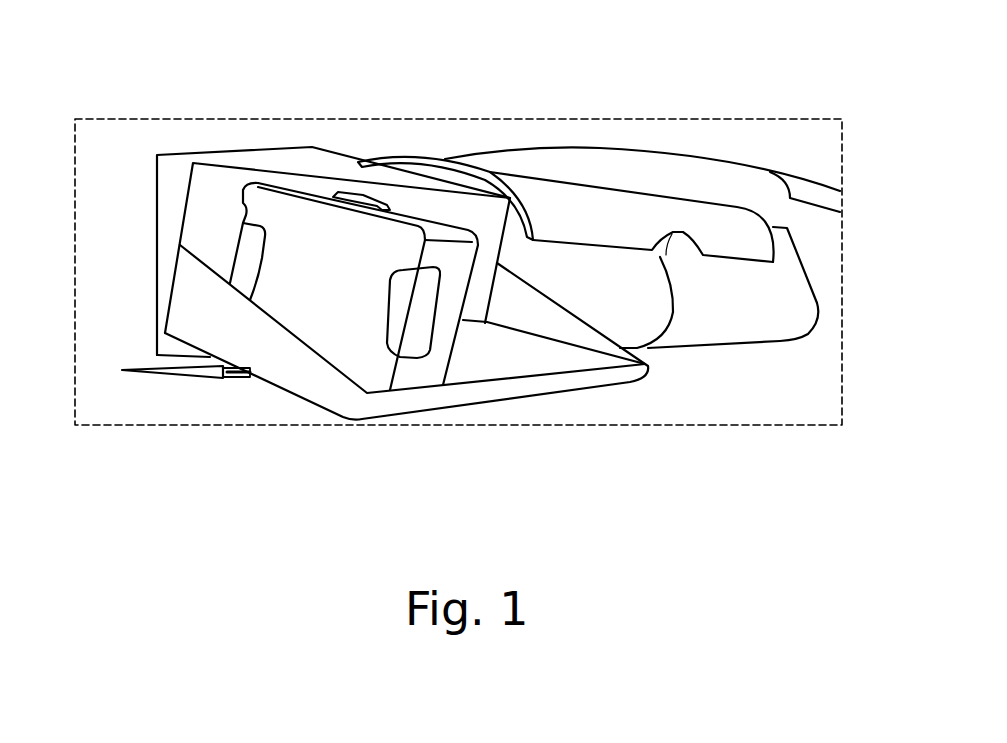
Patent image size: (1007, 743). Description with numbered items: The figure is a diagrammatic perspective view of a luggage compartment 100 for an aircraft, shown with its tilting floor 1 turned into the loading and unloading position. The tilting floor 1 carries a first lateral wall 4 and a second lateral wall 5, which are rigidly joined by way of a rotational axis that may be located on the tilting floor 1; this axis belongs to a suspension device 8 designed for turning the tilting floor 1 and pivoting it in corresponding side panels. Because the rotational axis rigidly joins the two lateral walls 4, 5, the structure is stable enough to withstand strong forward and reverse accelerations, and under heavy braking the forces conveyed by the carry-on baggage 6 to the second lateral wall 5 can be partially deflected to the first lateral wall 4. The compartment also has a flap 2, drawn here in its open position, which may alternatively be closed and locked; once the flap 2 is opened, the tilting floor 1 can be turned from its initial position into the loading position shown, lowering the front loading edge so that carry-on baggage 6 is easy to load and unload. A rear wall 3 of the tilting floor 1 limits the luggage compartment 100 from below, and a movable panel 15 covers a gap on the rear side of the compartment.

The luggage compartment 100 is at (400, 103).
The tilting floor 1 is at (318, 408).
The flap 2 is at (612, 205).
The rear wall 3 is at (157, 197).
The first lateral wall 4 is at (200, 312).
The second lateral wall 5 is at (545, 323).
The carry-on baggage 6 is at (408, 332).
The suspension device 8 is at (235, 378).
The movable panel 15 is at (168, 378).